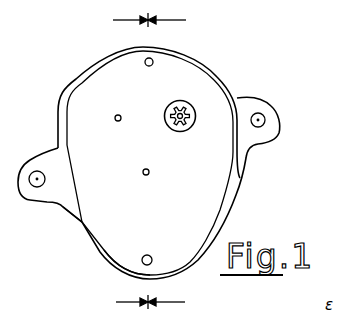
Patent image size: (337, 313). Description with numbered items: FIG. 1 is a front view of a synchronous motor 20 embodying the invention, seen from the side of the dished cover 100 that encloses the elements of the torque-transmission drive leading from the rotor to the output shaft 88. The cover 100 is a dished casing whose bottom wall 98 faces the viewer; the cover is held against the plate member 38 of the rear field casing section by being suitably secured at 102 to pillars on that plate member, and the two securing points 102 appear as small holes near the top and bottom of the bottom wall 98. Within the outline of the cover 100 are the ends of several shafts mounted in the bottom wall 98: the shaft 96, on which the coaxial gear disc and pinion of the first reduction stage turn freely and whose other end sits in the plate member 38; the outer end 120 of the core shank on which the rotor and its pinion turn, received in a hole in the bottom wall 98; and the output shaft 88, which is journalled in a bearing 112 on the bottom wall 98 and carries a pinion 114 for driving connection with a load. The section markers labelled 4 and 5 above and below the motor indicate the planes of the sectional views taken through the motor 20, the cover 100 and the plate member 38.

The section line 4- 4 is at (174, 163).
The section line 5- 5 is at (123, 163).
The synchronous motor 20 is at (232, 71).
The plate member 38 is at (235, 171).
The output shaft 88 is at (181, 119).
The shaft 96 is at (116, 121).
The bottom wall 98 is at (129, 222).
The dished cover 100 is at (82, 222).
The securing points 102 is at (152, 65).
The bearing 112 is at (191, 107).
The pinion 114 is at (173, 108).
The outer end of core shank 120 is at (148, 175).